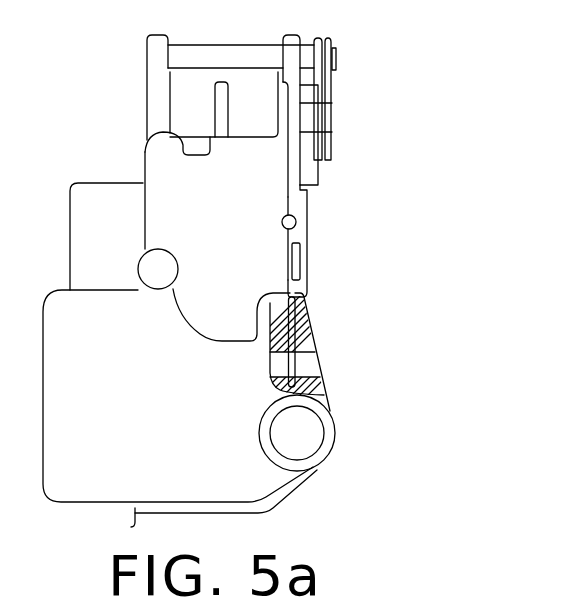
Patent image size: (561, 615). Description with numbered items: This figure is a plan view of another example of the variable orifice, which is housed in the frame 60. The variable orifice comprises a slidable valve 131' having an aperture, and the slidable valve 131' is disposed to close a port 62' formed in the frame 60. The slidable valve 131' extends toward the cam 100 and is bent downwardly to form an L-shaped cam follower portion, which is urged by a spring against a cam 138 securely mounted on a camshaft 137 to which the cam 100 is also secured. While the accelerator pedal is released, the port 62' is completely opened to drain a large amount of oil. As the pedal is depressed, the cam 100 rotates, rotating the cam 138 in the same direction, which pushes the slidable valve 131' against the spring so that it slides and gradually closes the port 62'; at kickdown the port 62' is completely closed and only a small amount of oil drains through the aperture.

The frame 60 is at (155, 170).
The camshaft 137 is at (240, 55).
The cam 138 is at (307, 121).
The cam 100 is at (333, 136).
The slidable valve 131' is at (333, 286).
The port 62' is at (302, 382).